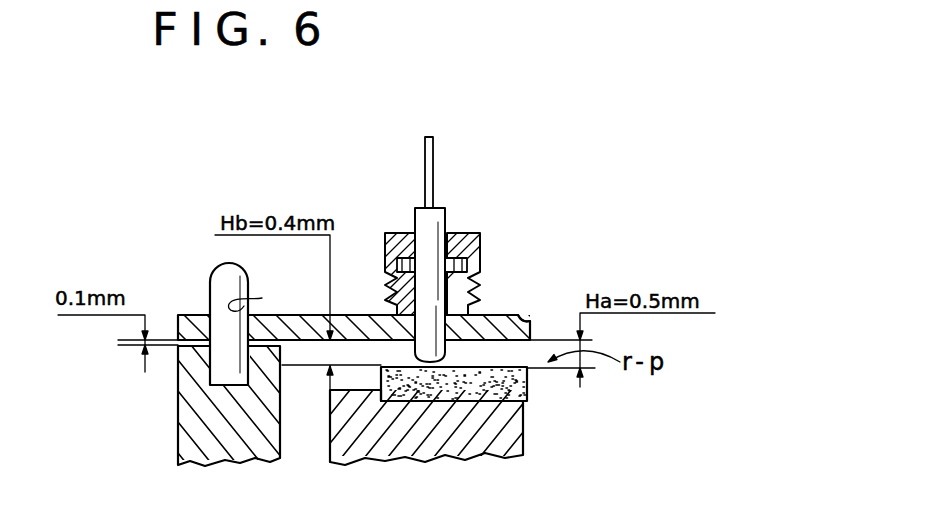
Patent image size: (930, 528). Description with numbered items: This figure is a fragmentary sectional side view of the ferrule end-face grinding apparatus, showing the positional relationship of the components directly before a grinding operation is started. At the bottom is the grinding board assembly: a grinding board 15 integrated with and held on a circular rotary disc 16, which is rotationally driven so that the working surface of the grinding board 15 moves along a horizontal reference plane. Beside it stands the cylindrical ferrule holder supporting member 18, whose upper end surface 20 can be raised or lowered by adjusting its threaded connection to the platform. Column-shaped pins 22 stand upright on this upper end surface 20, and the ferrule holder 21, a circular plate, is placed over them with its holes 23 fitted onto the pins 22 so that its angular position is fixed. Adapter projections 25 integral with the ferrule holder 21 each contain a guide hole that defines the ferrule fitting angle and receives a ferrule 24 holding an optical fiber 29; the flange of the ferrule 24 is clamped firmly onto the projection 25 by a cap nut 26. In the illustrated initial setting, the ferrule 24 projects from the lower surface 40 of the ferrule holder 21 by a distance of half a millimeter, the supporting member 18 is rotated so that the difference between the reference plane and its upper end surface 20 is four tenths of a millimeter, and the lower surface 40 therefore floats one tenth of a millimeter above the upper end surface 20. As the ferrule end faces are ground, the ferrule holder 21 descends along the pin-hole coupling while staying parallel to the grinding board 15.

The grinding board 15 is at (528, 385).
The circular rotary disc 16 is at (527, 447).
The ferrule holder supporting member 18 is at (178, 440).
The upper end surface 20 is at (180, 374).
The ferrule holder 21 is at (504, 316).
The column-shaped pin 22 is at (222, 282).
The hole 23 is at (263, 289).
The ferrule 24 is at (442, 236).
The adapter projection 25 is at (456, 272).
The cap nut 26 is at (484, 234).
The optical fiber 29 is at (435, 150).
The lower surface 40 is at (531, 322).